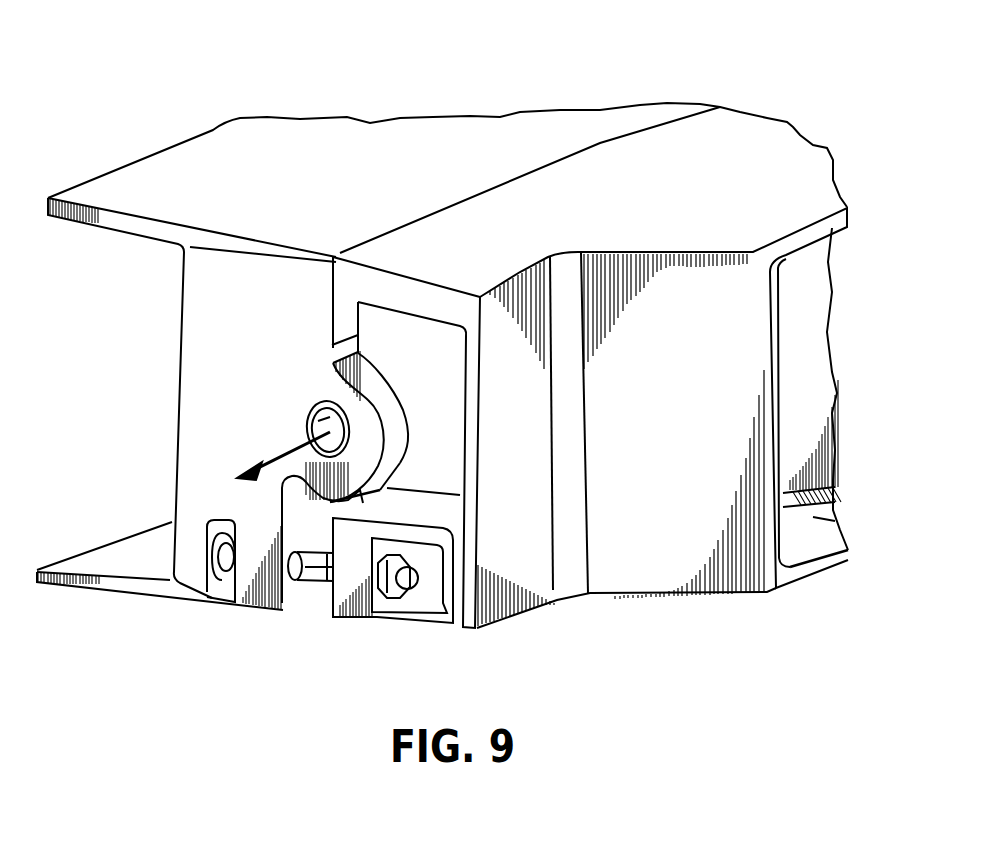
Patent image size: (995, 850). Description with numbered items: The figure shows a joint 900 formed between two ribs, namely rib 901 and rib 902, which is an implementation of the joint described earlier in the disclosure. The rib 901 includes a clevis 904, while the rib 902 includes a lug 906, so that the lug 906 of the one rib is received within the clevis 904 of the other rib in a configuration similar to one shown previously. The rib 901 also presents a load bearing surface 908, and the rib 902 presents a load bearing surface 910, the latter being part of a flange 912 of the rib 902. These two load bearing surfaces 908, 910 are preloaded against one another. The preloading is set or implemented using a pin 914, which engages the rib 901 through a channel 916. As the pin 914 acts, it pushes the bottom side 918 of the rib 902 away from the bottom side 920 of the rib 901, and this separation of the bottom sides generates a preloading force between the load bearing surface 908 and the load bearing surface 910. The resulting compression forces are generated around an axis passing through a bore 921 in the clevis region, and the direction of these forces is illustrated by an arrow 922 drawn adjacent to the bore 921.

The joint 900 is at (158, 78).
The rib 901 is at (114, 163).
The rib 902 is at (817, 137).
The clevis 904 is at (380, 385).
The lug 906 is at (448, 455).
The load bearing surface 908 is at (345, 262).
The load bearing surface 910 is at (330, 290).
The flange 912 is at (428, 293).
The pin 914 is at (417, 587).
The channel 916 is at (323, 583).
The bottom side 918 is at (663, 597).
The bottom side 920 is at (152, 600).
The bore 921 is at (310, 413).
The arrow 922 is at (270, 452).